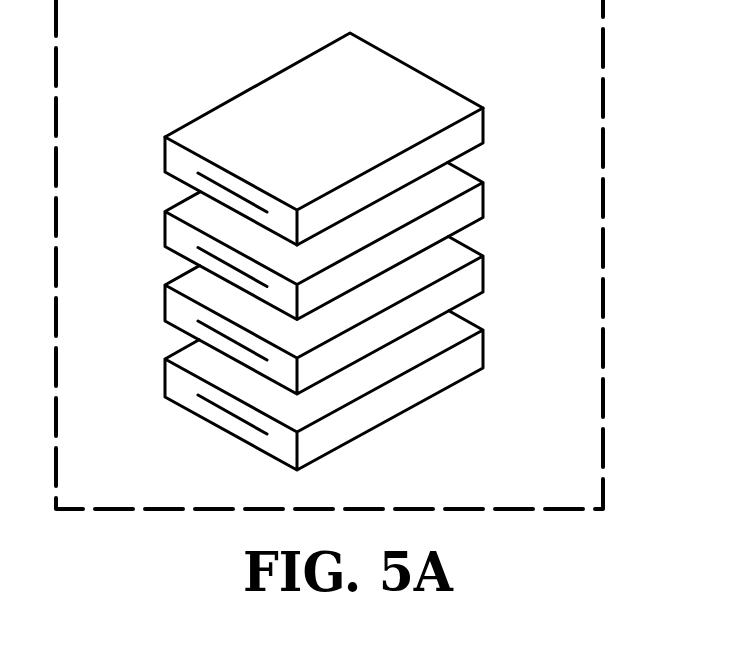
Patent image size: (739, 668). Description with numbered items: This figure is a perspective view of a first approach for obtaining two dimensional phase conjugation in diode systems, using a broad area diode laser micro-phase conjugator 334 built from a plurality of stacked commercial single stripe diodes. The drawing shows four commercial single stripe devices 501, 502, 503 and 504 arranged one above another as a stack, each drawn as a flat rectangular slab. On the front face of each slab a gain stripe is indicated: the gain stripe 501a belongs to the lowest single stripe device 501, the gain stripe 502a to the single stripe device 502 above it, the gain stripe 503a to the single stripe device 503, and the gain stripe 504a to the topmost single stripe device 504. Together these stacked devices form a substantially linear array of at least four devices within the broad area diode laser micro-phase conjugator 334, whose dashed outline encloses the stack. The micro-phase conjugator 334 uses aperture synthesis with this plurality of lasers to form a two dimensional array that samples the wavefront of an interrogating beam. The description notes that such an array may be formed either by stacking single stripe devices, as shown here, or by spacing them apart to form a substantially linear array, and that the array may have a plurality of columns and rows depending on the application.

The broad area diode laser micro-phase conjugator 334 is at (575, 490).
The single stripe device 501 is at (485, 343).
The single stripe device 502 is at (485, 269).
The single stripe device 503 is at (485, 195).
The single stripe device 504 is at (485, 120).
The gain stripe 501a is at (223, 409).
The gain stripe 502a is at (200, 324).
The gain stripe 503a is at (199, 251).
The gain stripe 504a is at (199, 174).